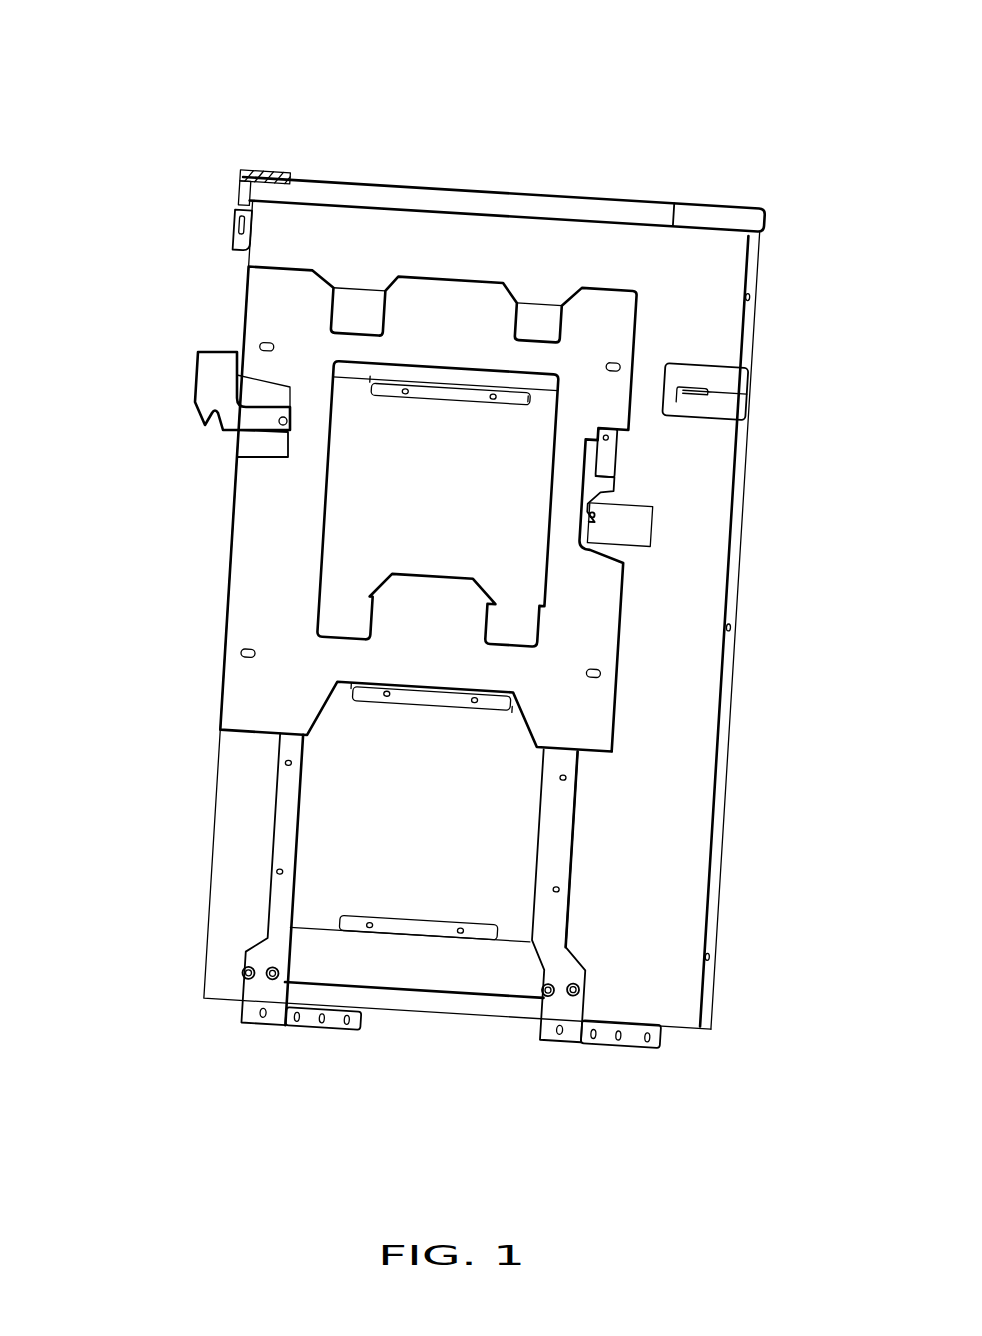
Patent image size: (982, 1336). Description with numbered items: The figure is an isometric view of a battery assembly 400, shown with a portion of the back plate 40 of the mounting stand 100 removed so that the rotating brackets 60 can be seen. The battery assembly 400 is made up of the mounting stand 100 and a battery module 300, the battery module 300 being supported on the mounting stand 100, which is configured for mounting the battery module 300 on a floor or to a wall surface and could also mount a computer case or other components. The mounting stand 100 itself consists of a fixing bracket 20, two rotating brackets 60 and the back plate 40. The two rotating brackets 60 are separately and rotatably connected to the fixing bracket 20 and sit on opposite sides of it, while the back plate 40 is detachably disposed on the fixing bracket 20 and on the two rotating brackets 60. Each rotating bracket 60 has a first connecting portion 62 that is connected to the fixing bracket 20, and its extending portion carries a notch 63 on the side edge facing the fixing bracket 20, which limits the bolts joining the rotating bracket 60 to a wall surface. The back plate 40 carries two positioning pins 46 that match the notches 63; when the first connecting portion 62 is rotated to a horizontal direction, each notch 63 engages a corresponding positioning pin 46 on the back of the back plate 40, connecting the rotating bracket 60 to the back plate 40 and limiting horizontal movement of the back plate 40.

The battery assembly 400 is at (442, 42).
The battery module 300 is at (723, 271).
The mounting stand 100 is at (140, 638).
The rotating bracket 60 is at (242, 418).
The back plate 40 is at (267, 698).
The fixing bracket 20 is at (285, 788).
The first connecting portion 62 is at (607, 453).
The notch 63 is at (610, 500).
The positioning pin 46 is at (600, 512).